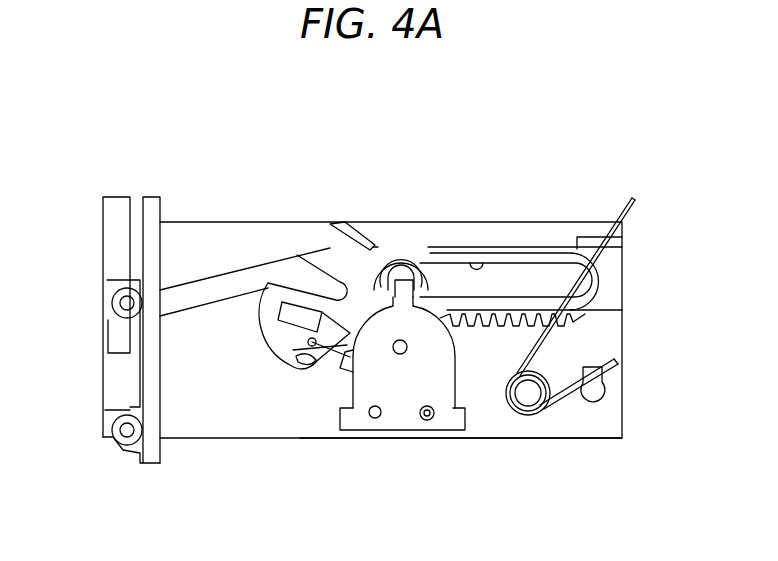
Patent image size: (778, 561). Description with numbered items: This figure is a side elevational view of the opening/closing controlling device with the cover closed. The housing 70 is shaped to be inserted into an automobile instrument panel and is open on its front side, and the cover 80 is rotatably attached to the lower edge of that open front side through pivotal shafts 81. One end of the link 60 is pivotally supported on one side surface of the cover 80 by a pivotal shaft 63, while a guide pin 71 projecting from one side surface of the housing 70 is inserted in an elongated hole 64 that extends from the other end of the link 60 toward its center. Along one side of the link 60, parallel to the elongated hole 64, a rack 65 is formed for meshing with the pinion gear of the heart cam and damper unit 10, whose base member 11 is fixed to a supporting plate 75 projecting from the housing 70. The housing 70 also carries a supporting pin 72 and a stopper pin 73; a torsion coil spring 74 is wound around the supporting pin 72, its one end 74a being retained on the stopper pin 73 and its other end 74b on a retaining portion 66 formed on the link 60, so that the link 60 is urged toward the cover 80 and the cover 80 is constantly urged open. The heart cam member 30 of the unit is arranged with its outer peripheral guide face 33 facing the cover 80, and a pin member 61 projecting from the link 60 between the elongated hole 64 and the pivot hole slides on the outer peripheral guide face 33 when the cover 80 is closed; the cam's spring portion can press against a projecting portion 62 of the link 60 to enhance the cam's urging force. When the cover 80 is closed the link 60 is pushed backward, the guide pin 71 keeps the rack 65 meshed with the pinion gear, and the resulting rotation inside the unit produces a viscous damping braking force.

The heart cam and damper unit 10 is at (342, 388).
The base member 11 is at (407, 415).
The heart cam member 30 is at (338, 268).
The outer peripheral guide face 33 is at (283, 320).
The link 60 is at (237, 288).
The pin member 61 is at (311, 346).
The projecting portion 62 is at (348, 228).
The pivotal shaft 63 is at (127, 302).
The elongated hole 64 is at (492, 262).
The rack 65 is at (487, 327).
The retaining portion 66 is at (587, 237).
The housing 70 is at (243, 440).
The guide pin 71 is at (399, 248).
The supporting pin 72 is at (527, 400).
The stopper pin 73 is at (603, 404).
The torsion coil spring 74 is at (543, 403).
The one end of torsion coil spring 74a is at (622, 363).
The another end of torsion coil spring 74b is at (634, 199).
The supporting plate 75 is at (370, 440).
The cover 80 is at (103, 253).
The pivotal shaft 81 is at (112, 447).